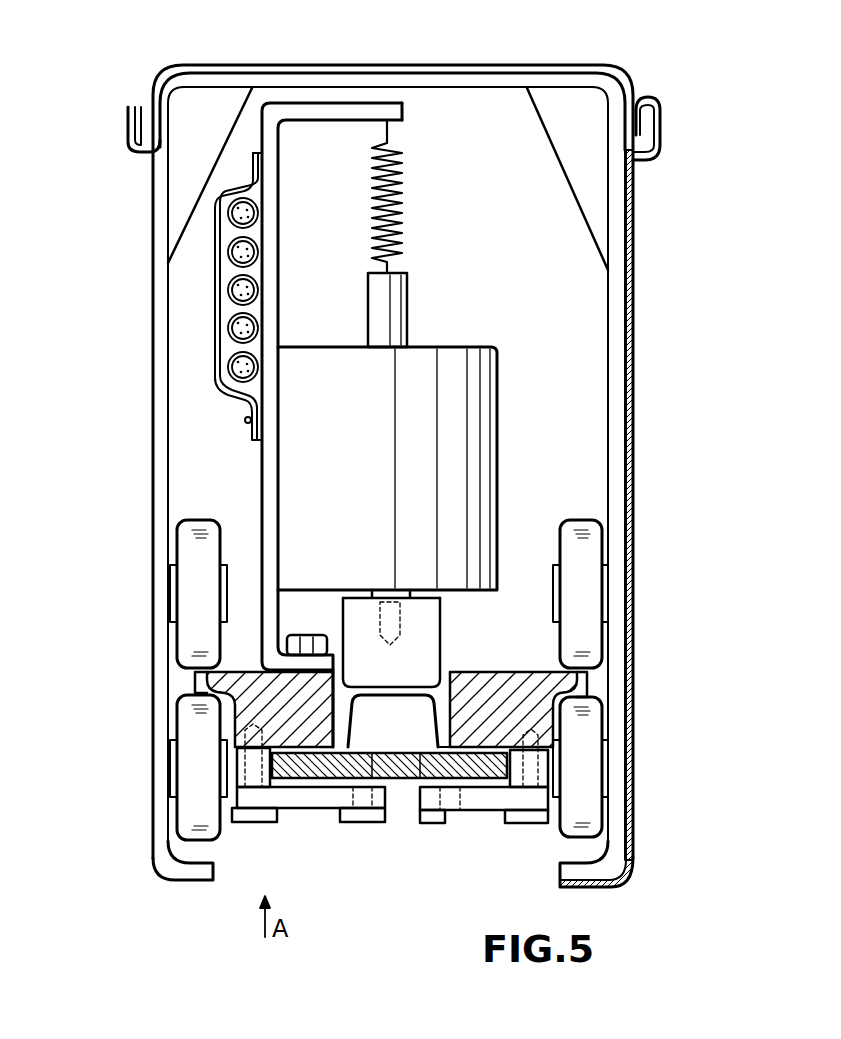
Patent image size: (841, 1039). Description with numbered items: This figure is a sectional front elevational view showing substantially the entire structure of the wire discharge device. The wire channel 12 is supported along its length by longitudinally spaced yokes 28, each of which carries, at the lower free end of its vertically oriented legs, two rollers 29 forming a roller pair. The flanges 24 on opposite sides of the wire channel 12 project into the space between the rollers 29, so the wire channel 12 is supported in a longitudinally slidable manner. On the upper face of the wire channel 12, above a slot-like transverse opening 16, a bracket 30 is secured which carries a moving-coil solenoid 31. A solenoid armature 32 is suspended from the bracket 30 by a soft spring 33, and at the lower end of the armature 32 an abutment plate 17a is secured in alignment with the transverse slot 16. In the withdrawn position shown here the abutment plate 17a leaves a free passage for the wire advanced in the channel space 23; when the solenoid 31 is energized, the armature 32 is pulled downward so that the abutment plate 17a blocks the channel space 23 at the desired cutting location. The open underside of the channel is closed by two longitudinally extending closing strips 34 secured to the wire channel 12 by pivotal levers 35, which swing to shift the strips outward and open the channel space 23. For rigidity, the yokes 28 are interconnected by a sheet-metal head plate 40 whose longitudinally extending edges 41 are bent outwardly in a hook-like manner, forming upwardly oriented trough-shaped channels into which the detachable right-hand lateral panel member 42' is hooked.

The wire channel 12 is at (508, 690).
The slot-like transverse opening 16 is at (440, 698).
The abutment plate 17a is at (352, 627).
The channel space 23 is at (370, 720).
The flange 24 is at (195, 683).
The yoke 28 is at (613, 335).
The roller 29 is at (190, 590).
The bracket 30 is at (270, 462).
The moving-coil solenoid 31 is at (480, 383).
The solenoid armature 32 is at (405, 302).
The soft spring 33 is at (408, 208).
The closing strip 34 is at (310, 770).
The pivotal lever 35 is at (267, 800).
The head plate 40 is at (503, 66).
The longitudinally extending edge 41 is at (131, 121).
The lateral panel member 42' is at (622, 518).